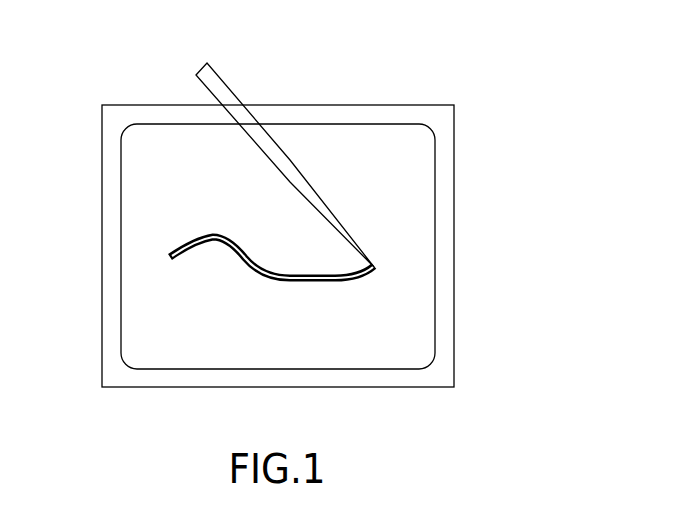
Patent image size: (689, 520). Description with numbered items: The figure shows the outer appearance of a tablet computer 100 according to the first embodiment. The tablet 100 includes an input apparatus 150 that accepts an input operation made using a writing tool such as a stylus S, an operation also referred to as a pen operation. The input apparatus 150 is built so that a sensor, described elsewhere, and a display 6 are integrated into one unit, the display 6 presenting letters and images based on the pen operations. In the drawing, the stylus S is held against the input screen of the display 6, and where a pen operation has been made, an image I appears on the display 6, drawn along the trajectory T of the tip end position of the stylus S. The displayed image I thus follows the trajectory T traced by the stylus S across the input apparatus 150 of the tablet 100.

The tablet computer 100 is at (331, 93).
The input apparatus 150 is at (235, 246).
The display 6 is at (142, 311).
The stylus S is at (226, 84).
The image I is at (225, 303).
The trajectory T is at (275, 281).